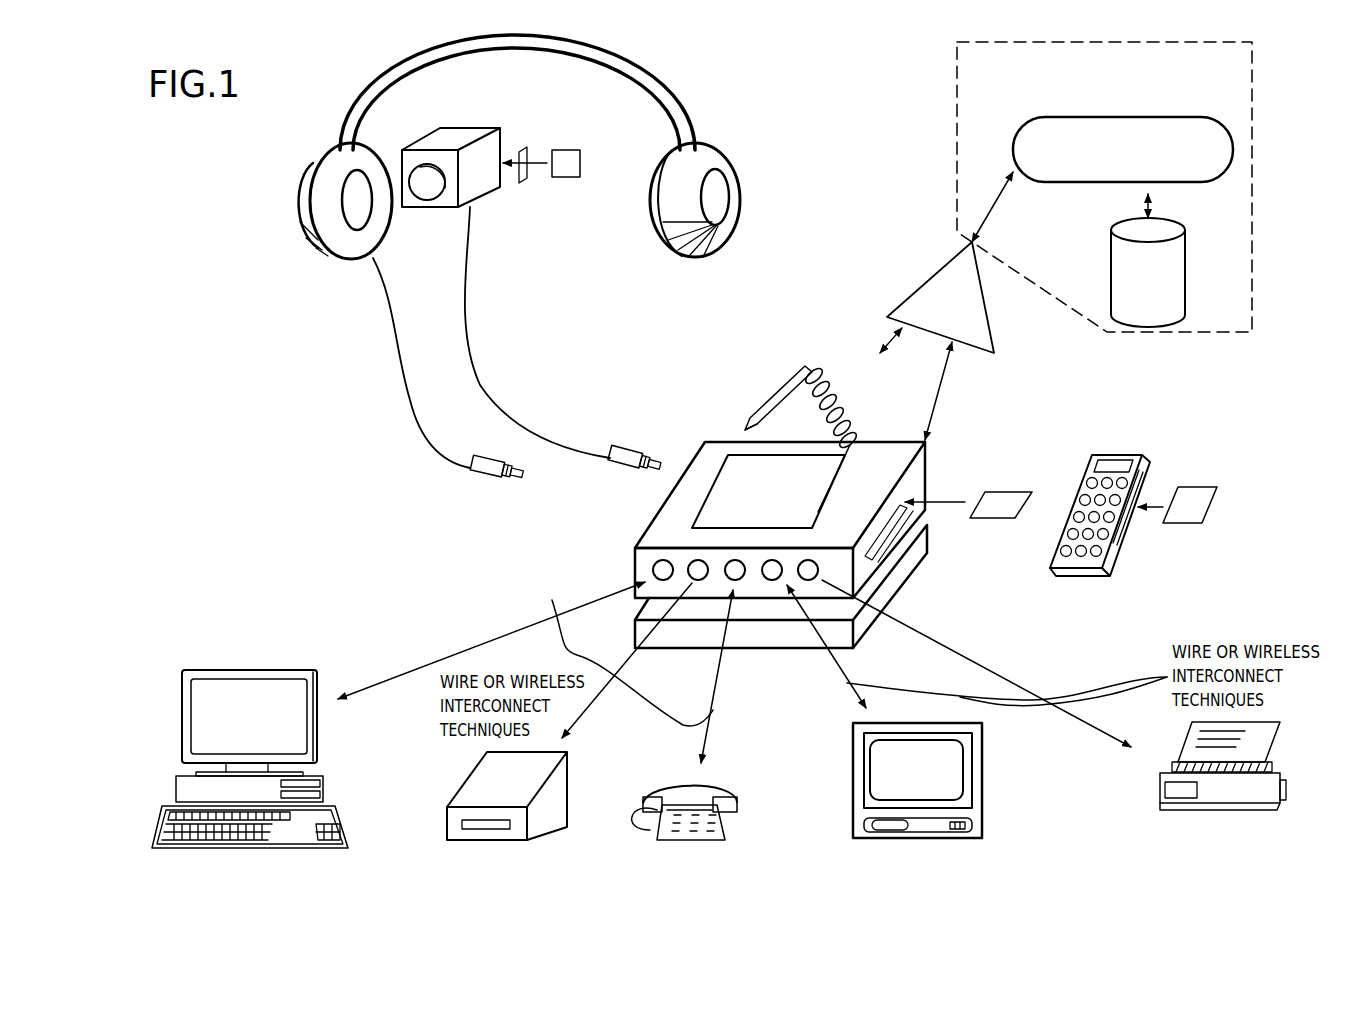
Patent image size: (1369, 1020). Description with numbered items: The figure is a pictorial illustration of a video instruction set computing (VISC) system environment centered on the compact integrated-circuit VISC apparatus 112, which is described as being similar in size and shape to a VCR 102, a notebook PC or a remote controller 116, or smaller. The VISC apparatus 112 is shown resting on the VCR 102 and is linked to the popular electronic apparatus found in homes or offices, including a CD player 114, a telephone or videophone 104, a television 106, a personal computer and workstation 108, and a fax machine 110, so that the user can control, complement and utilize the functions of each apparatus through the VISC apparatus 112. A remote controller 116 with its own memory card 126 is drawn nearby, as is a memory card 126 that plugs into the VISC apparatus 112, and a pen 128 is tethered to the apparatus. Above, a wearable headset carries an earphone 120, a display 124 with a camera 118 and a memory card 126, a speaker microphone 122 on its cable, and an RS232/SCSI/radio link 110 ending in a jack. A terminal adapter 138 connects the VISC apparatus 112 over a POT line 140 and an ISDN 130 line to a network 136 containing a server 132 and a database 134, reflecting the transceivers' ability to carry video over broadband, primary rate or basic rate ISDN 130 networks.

The VCR 102 is at (710, 643).
The CD player / telephone (videophone) 104 is at (725, 833).
The television 106 is at (985, 828).
The personal computer 108 is at (270, 734).
The fax 110 is at (473, 295).
The VISC system apparatus 112 is at (635, 557).
The CD player 114 is at (498, 812).
The remote controller 116 is at (1097, 453).
The camera (SPC) 118 is at (428, 190).
The earphone 120 is at (715, 153).
The speaker microphone 122 is at (487, 463).
The display 124 is at (458, 127).
The memory card 126 is at (1190, 485).
The pen 128 is at (785, 383).
The ISDN 130 is at (997, 203).
The server 132 is at (1160, 115).
The database 134 is at (1180, 222).
The network 136 is at (1252, 78).
The terminal adapter (TA) 138 is at (940, 268).
The POT line 140 is at (940, 393).